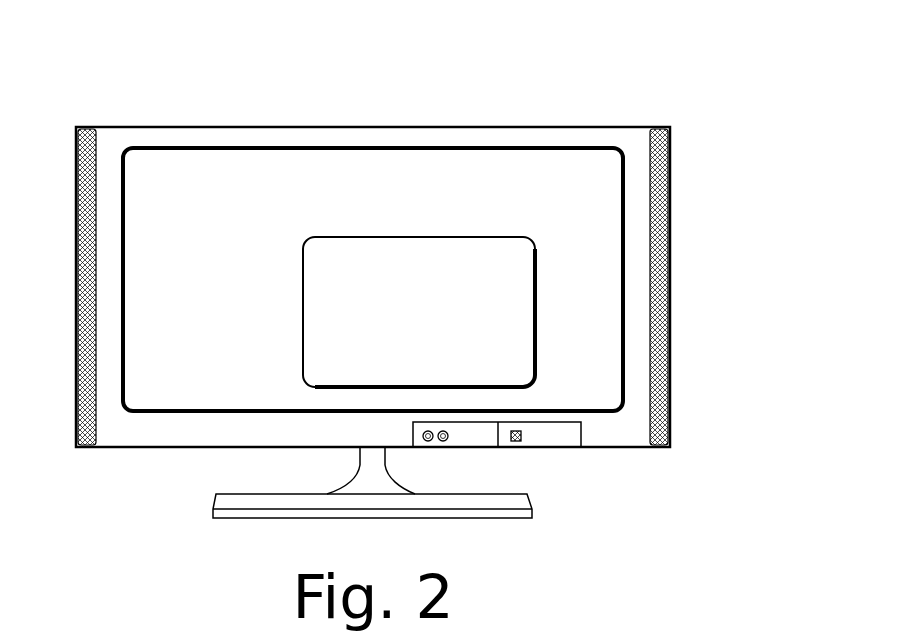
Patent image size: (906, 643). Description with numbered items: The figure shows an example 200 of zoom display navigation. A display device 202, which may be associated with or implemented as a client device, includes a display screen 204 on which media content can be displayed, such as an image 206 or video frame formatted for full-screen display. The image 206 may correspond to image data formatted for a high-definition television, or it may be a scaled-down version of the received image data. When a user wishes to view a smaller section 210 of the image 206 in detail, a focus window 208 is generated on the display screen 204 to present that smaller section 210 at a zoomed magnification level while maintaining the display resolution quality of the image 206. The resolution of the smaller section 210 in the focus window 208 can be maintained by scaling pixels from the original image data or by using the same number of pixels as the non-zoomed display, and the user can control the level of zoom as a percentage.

The example of zoom display navigation 200 is at (657, 78).
The display device 202 is at (330, 127).
The display screen 204 is at (199, 148).
The image 206 is at (373, 184).
The focus window 208 is at (419, 312).
The smaller section 210 is at (330, 321).